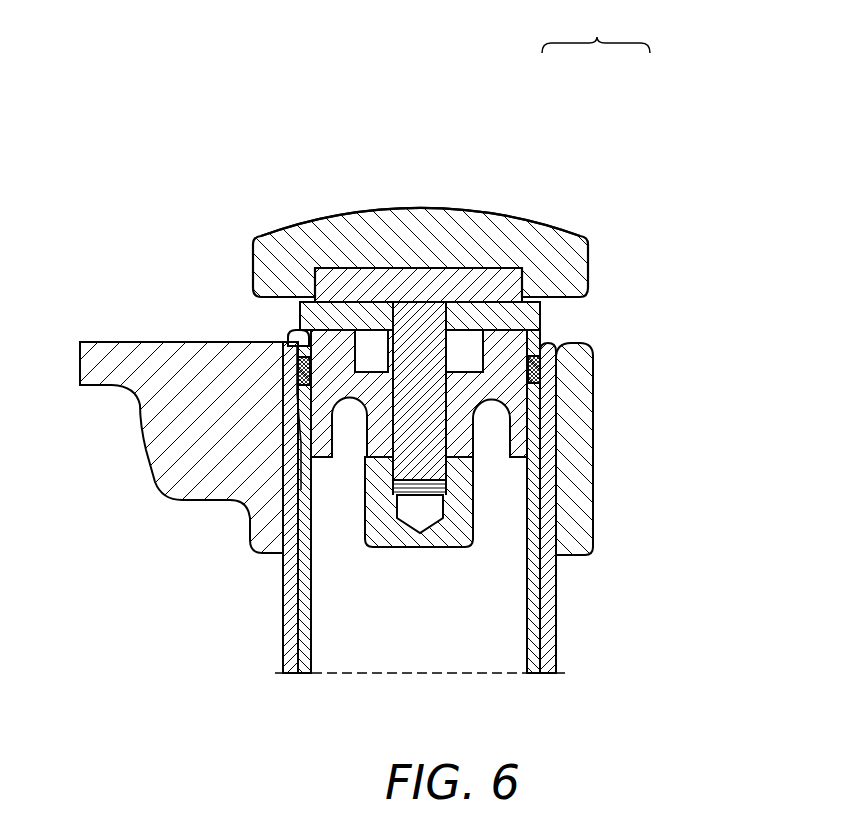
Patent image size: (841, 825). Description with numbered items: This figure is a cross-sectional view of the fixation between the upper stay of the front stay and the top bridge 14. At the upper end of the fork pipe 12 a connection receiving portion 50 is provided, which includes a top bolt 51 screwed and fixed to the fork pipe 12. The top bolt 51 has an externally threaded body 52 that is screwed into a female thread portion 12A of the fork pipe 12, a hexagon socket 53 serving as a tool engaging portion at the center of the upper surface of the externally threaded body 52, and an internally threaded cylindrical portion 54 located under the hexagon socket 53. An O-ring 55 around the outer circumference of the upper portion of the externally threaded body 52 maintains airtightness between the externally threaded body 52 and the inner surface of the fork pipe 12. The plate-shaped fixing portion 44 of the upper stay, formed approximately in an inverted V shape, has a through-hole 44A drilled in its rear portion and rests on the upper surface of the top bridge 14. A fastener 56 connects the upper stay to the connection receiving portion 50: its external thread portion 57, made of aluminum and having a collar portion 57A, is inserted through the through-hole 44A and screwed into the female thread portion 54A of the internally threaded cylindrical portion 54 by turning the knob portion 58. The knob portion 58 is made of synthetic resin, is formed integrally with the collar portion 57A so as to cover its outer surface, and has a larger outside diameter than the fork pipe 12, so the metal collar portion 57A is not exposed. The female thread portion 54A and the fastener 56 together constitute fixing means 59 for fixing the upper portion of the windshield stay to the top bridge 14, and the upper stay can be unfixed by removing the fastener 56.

The fork pipe 12 is at (293, 643).
The female thread portion 12A is at (300, 418).
The top bridge 14 is at (113, 343).
The fixing portion 44 is at (517, 272).
The through-hole 44A is at (405, 300).
The connection receiving portion 50 is at (280, 463).
The top bolt 51 is at (291, 331).
The externally threaded body 52 is at (310, 342).
The hexagon socket 53 is at (318, 230).
The internally threaded cylindrical portion 54 is at (352, 478).
The female thread portion 54A is at (506, 232).
The O-ring 55 is at (543, 371).
The fastener 56 is at (415, 207).
The external thread portion 57 is at (445, 378).
The collar portion 57A is at (543, 330).
The knob portion 58 is at (490, 305).
The fixing means 59 is at (596, 32).